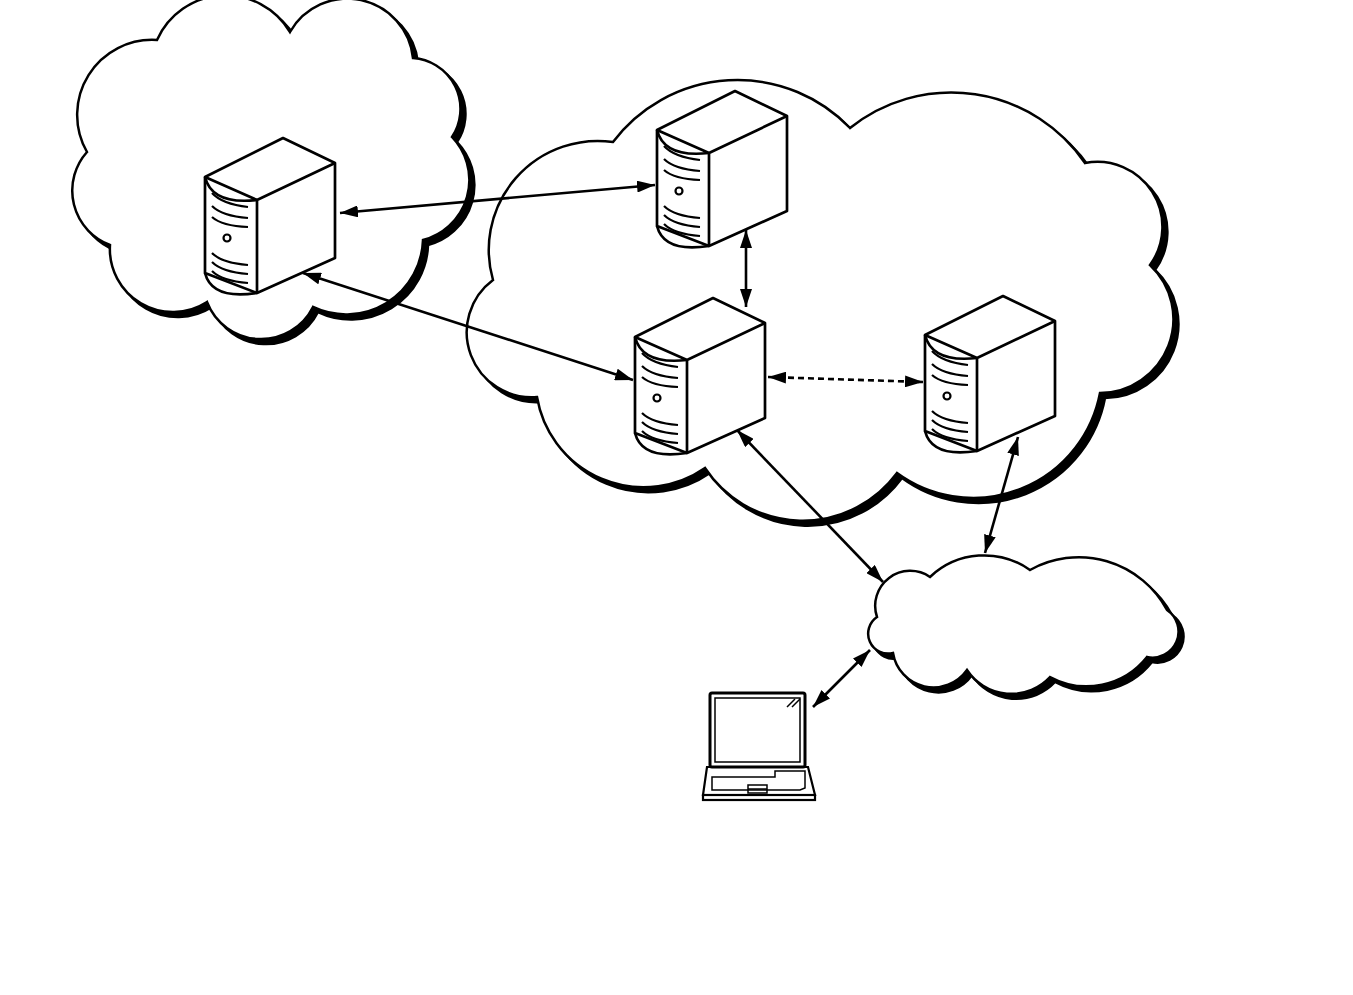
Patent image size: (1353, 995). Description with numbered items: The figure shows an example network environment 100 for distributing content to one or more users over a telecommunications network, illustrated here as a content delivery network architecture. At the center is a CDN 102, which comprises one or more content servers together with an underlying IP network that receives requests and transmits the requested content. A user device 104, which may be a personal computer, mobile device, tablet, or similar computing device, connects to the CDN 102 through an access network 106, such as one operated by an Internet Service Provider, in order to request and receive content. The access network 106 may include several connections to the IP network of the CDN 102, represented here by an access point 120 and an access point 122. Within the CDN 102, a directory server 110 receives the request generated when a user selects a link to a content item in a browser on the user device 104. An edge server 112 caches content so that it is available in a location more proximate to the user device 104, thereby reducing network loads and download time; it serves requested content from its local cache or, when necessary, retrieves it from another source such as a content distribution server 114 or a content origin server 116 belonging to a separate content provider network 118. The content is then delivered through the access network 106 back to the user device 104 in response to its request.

The network environment 100 is at (1224, 140).
The content delivery network (CDN) 102 is at (936, 251).
The user device 104 is at (707, 766).
The access network 106 is at (1003, 645).
The directory server 110 is at (1057, 350).
The edge server 112 is at (667, 317).
The content distribution server 114 is at (788, 187).
The content origin server 116 is at (205, 228).
The content provider network 118 is at (251, 111).
The access point 120 is at (850, 553).
The access point 122 is at (992, 528).